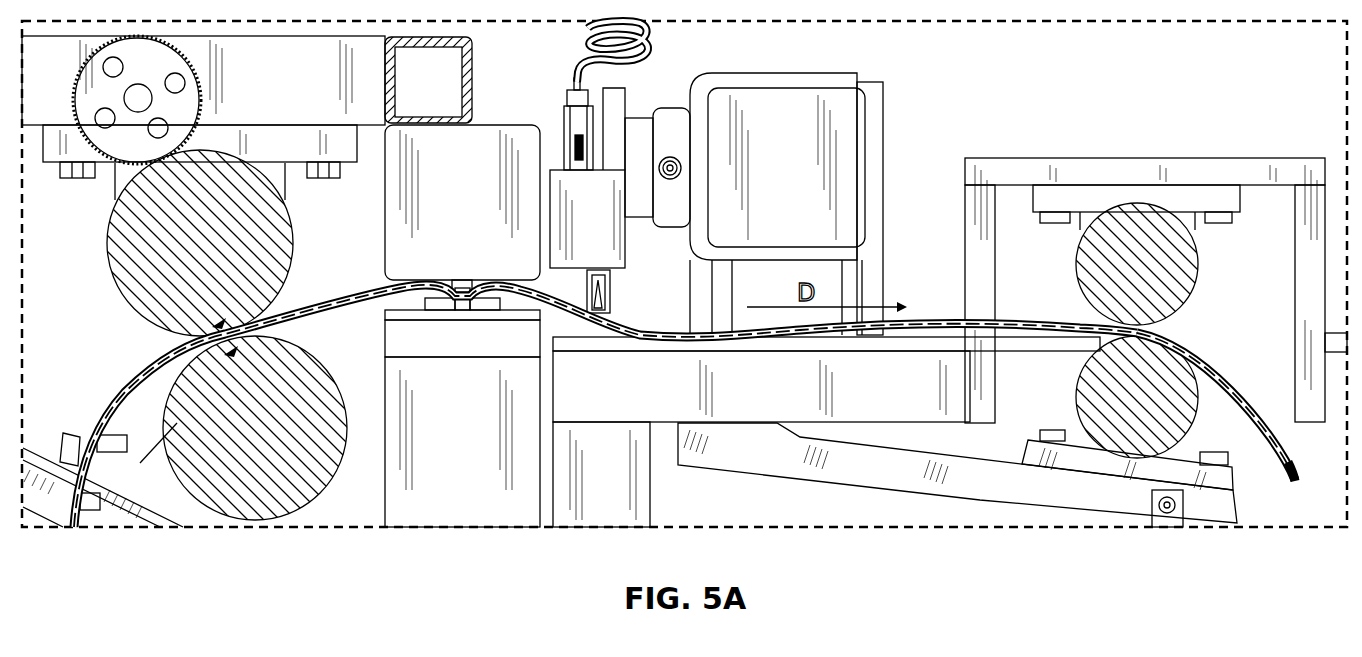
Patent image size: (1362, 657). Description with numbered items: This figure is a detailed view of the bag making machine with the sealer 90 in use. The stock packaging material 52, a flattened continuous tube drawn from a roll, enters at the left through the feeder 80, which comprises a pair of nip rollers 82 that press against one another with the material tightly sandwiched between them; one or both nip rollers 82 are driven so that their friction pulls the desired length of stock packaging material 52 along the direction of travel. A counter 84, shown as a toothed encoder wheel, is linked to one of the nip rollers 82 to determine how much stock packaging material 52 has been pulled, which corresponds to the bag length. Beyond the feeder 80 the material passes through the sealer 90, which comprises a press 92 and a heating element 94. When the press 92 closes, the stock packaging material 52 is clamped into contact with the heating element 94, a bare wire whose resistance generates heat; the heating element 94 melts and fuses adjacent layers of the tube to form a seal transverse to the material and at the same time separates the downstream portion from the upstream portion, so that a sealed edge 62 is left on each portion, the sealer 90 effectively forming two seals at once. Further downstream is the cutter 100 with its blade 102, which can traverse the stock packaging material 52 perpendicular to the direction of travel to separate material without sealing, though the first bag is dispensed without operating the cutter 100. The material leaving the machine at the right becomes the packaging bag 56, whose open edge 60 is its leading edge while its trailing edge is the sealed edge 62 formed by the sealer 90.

The stock packaging material 52 is at (327, 296).
The packaging bag 56 is at (1237, 372).
The open edge 60 is at (1296, 484).
The sealed edge 62 is at (466, 300).
The feeder 80 is at (202, 335).
The nip rollers 82 is at (327, 385).
The counter 84 is at (85, 88).
The sealer 90 is at (520, 110).
The press 92 is at (517, 313).
The heating element 94 is at (460, 284).
The cutter 100 is at (722, 62).
The blade 102 is at (612, 287).